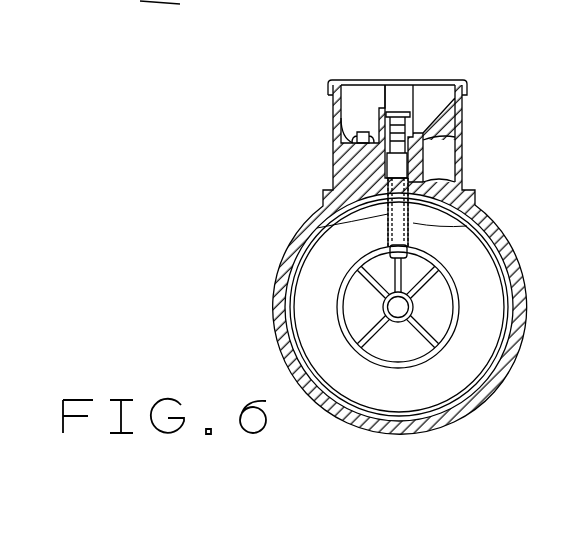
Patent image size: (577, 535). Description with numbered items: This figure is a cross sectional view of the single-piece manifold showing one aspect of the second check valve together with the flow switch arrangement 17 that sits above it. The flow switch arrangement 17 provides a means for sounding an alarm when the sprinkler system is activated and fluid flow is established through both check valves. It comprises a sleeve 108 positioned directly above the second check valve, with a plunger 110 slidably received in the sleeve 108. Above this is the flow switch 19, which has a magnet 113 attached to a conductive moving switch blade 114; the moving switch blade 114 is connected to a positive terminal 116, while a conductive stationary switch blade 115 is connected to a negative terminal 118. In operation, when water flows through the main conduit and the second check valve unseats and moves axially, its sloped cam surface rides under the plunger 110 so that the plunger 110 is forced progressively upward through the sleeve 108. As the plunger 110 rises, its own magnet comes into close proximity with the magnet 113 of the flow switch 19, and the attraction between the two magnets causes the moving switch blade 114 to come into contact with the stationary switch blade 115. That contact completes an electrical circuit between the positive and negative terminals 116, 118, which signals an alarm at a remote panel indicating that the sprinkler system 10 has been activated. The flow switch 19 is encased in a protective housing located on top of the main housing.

The valve assembly 10 is at (0, 143).
The flow switch arrangement 17 is at (515, 67).
The flow switch 19 is at (432, 139).
The sleeve 108 is at (388, 214).
The plunger 110 is at (491, 224).
The magnet 113 is at (455, 113).
The conductive moving switch blade 114 is at (360, 160).
The conductive stationary switch blade 115 is at (340, 113).
The positive terminal 116 is at (365, 132).
The negative terminal 118 is at (407, 103).